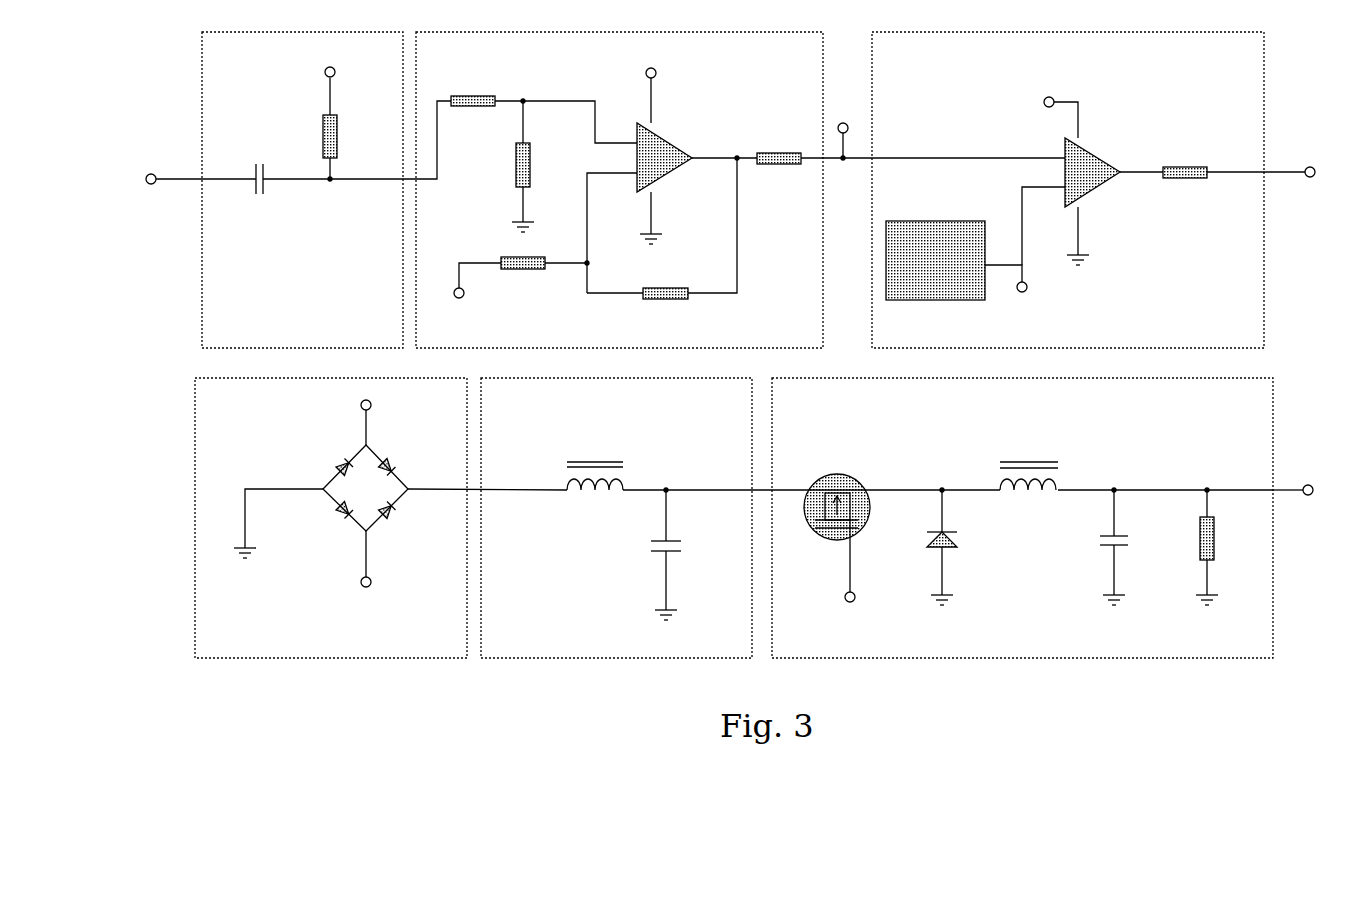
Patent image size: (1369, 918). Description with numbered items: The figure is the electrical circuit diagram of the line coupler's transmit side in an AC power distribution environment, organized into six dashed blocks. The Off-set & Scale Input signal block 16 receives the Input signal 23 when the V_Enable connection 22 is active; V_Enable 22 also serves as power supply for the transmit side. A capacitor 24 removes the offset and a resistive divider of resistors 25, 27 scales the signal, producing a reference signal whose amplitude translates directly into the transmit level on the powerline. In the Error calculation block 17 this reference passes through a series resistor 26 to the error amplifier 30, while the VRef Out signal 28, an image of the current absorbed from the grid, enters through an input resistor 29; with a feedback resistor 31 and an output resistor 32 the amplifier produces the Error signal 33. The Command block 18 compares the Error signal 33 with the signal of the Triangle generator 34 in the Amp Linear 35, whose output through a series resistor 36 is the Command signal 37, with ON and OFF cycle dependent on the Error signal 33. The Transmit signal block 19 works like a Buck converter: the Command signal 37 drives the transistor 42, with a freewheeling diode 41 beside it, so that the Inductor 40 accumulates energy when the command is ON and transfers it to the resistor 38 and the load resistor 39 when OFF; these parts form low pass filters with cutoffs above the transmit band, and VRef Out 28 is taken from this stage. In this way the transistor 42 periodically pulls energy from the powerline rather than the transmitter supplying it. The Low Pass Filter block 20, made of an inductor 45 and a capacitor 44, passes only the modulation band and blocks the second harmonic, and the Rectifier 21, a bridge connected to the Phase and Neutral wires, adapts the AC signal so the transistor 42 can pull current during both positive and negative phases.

The Off-set & Scale Input signal block 16 is at (302, 190).
The Error calculation block 17 is at (619, 190).
The Command block 18 is at (1068, 190).
The Transmit signal block 19 is at (1022, 518).
The Low Pass Filter block 20 is at (616, 518).
The Rectifier 21 is at (381, 518).
The V_Enable connection 22 is at (339, 85).
The Input signal 23 is at (201, 183).
The capacitor 24 is at (288, 182).
The resistor 25 is at (346, 129).
The resistor R5 26 is at (544, 111).
The resistor 27 is at (535, 166).
The VRef Out signal 28 is at (883, 424).
The resistor R7 29 is at (524, 281).
The amplifier U2 30 is at (672, 180).
The resistor R8 31 is at (663, 241).
The resistor R9 32 is at (911, 165).
The Error signal 33 is at (842, 148).
The Triangle generator 34 is at (969, 270).
The Amp Linear 35 is at (1092, 170).
The resistor R10 36 is at (1234, 178).
The Command signal 37 is at (1073, 405).
The resistor 38 is at (1128, 546).
The load resistor R3 39 is at (1222, 546).
The Inductor 40 is at (1136, 480).
The diode D2 41 is at (941, 546).
The Transistor Q1 42 is at (828, 500).
The capacitor 44 is at (664, 554).
The inductor 45 is at (783, 484).